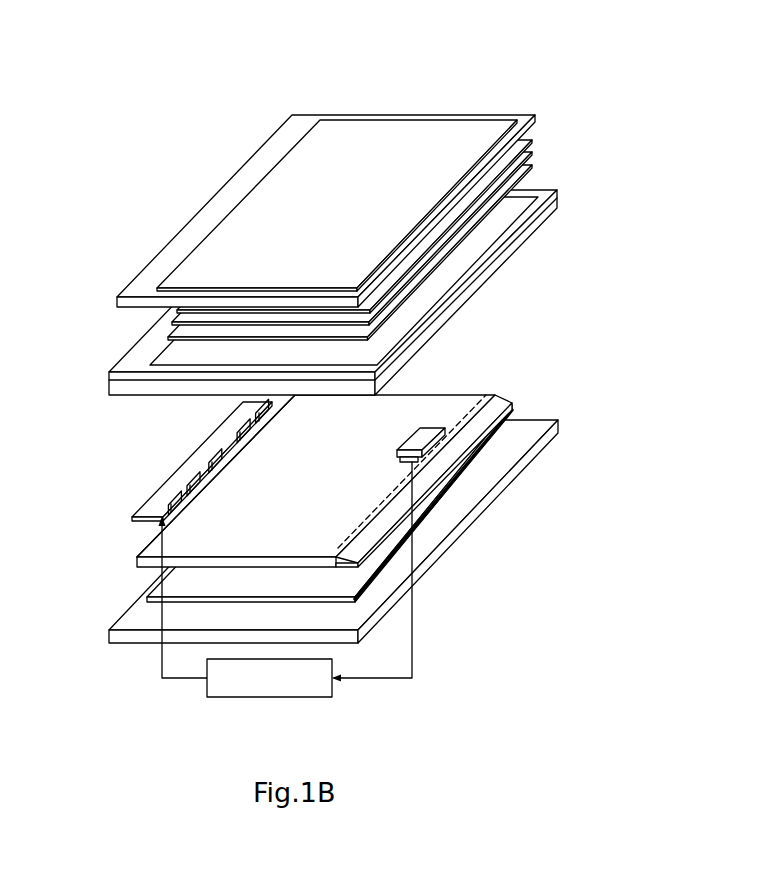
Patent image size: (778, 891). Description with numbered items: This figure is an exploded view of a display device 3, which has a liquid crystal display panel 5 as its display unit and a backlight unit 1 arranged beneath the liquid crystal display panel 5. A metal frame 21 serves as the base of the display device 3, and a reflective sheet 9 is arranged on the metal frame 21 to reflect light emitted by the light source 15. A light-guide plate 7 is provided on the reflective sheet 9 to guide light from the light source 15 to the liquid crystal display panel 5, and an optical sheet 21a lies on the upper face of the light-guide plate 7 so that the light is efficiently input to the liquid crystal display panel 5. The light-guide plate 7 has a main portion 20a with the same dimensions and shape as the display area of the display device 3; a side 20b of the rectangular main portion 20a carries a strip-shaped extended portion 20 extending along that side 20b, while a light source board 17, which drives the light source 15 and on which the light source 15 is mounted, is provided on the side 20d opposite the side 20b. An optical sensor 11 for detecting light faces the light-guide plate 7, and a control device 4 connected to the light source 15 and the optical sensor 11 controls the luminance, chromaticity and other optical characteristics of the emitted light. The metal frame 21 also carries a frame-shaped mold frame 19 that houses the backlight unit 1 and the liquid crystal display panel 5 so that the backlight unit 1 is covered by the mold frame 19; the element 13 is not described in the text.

The backlight unit 1 is at (341, 528).
The display device 3 is at (341, 388).
The control device 4 is at (322, 697).
The liquid crystal display panel 5 is at (302, 118).
The light-guide plate 7 is at (489, 445).
The reflective sheet 9 is at (530, 416).
The optical sensor 11 is at (430, 452).
The connector 13 is at (432, 443).
The light source 15 is at (178, 508).
The light source board 17 is at (143, 508).
The mold frame 19 is at (558, 196).
The extended portion 20 is at (321, 447).
The main portion 20a is at (398, 407).
The side 20b is at (465, 418).
The side 20d is at (138, 544).
The metal frame 21 is at (124, 637).
The optical sheet 21a is at (537, 133).